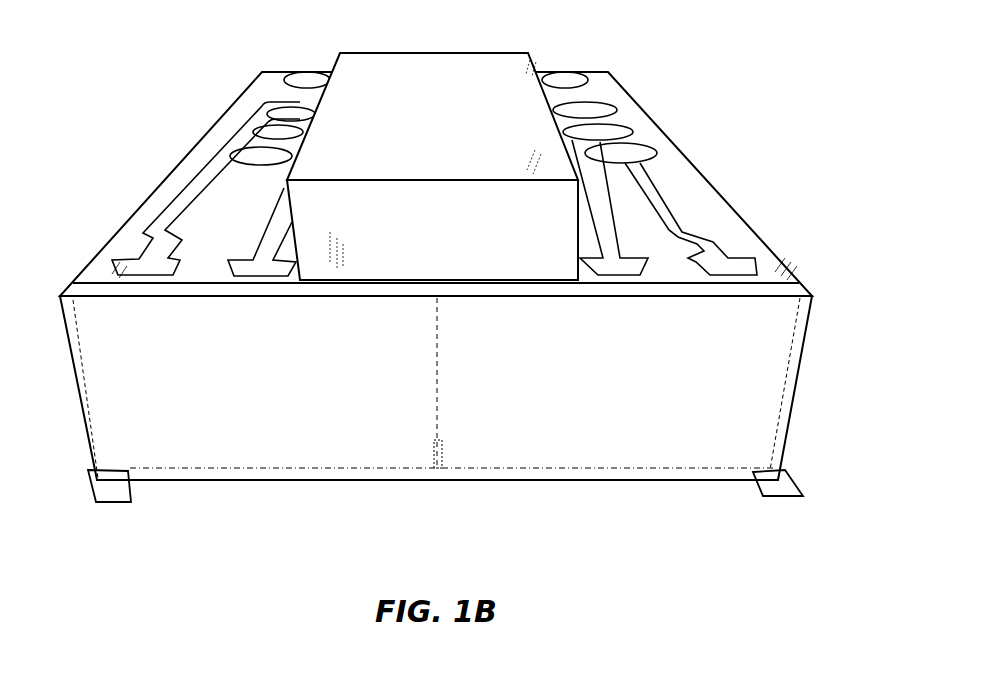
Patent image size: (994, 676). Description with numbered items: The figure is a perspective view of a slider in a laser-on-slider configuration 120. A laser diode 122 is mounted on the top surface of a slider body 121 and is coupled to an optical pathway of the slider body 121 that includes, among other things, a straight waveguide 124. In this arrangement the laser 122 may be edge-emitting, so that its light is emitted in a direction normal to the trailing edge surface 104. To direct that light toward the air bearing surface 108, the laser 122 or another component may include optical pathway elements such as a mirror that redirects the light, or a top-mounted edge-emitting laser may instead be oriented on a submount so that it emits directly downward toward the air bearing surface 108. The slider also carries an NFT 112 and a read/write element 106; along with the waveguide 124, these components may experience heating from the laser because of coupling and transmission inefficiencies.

The laser-on-slider configuration 120 is at (725, 108).
The slider body 121 is at (107, 252).
The laser diode 122 is at (362, 52).
The straight waveguide 124 is at (438, 367).
The trailing edge surface 104 is at (117, 502).
The read/write element 106 is at (443, 468).
The air bearing surface 108 is at (795, 497).
The NFT 112 is at (438, 470).